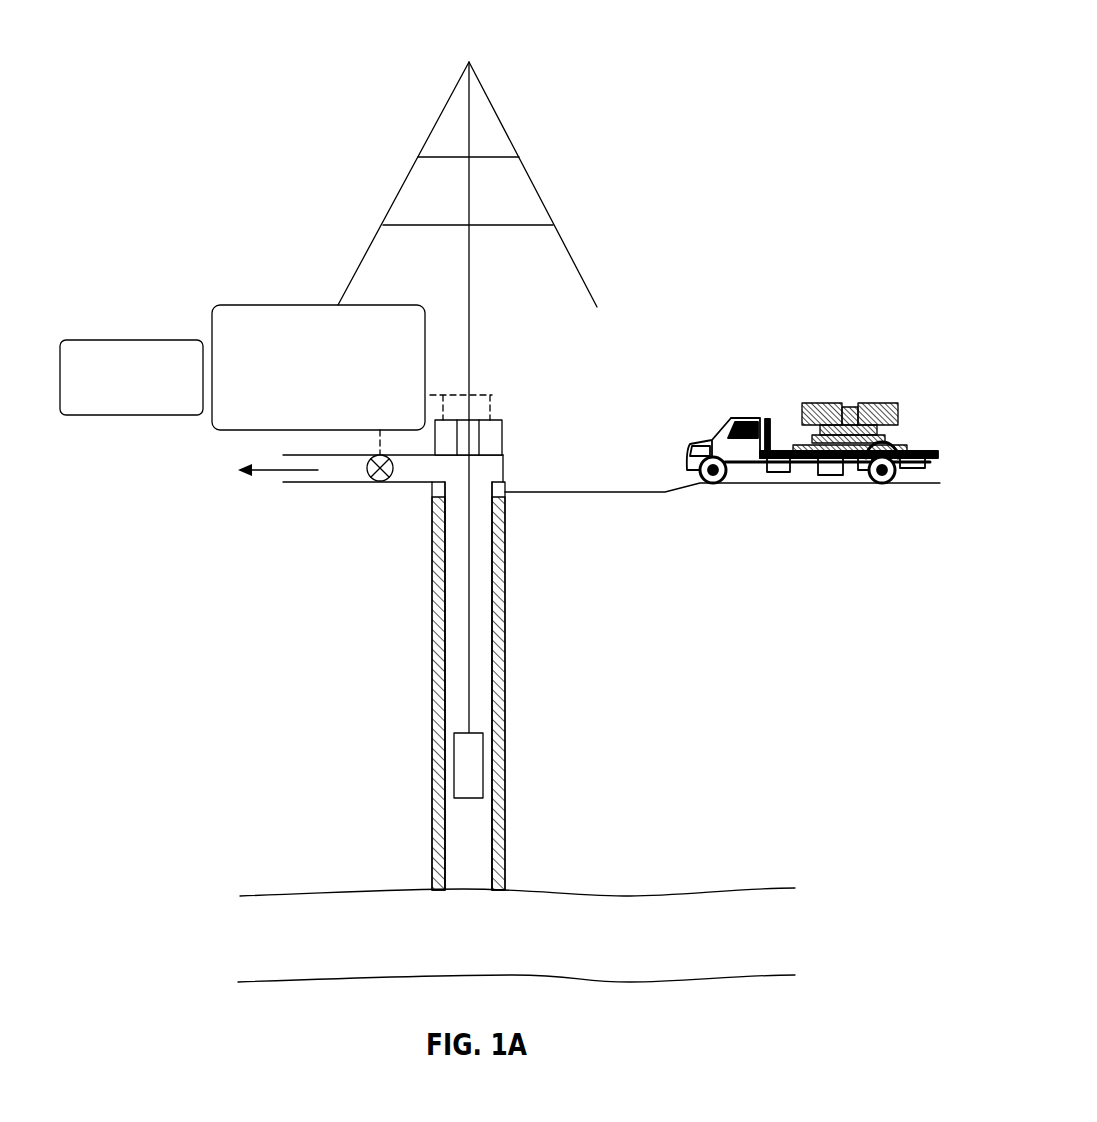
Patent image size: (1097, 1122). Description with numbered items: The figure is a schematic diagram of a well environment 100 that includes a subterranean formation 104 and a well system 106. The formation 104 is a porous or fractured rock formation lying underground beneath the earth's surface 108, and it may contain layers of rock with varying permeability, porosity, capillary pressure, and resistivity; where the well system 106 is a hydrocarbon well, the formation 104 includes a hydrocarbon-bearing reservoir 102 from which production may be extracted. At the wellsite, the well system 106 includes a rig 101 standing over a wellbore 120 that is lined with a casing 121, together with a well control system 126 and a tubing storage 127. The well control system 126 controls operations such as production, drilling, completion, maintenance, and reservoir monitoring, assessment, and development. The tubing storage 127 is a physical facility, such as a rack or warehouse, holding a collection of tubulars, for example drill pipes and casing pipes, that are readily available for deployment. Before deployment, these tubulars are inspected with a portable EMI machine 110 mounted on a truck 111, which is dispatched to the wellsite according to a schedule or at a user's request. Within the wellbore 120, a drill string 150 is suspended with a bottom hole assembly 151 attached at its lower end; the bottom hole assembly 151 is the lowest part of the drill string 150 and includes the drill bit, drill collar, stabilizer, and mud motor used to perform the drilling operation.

The well environment 100 is at (681, 41).
The rig 101 is at (525, 166).
The hydrocarbon-bearing reservoir 102 is at (642, 948).
The subterranean formation 104 is at (643, 752).
The well system 106 is at (292, 236).
The surface 108 is at (621, 494).
The portable EMI machine 110 is at (833, 396).
The truck 111 is at (715, 403).
The wellbore 120 is at (478, 660).
The casing 121 is at (505, 580).
The well control system 126 is at (277, 305).
The tubing storage 127 is at (125, 340).
The drill string 150 is at (467, 597).
The bottom hole assembly 151 is at (454, 773).